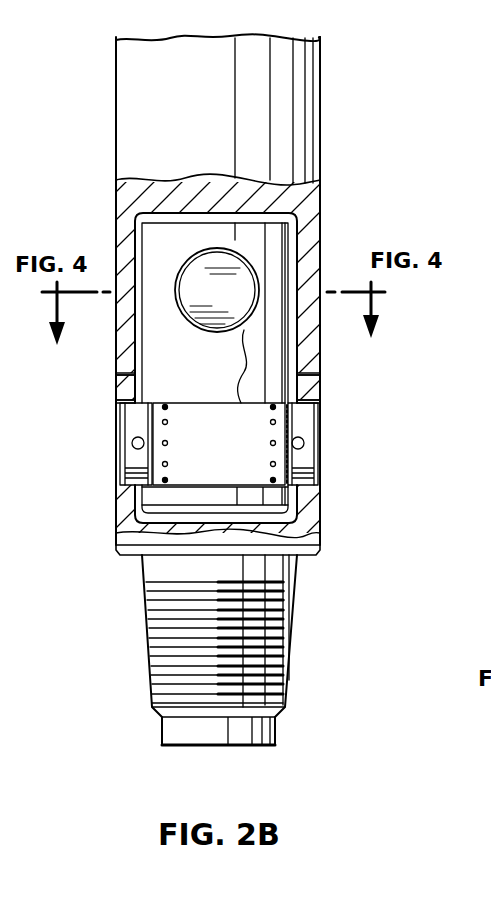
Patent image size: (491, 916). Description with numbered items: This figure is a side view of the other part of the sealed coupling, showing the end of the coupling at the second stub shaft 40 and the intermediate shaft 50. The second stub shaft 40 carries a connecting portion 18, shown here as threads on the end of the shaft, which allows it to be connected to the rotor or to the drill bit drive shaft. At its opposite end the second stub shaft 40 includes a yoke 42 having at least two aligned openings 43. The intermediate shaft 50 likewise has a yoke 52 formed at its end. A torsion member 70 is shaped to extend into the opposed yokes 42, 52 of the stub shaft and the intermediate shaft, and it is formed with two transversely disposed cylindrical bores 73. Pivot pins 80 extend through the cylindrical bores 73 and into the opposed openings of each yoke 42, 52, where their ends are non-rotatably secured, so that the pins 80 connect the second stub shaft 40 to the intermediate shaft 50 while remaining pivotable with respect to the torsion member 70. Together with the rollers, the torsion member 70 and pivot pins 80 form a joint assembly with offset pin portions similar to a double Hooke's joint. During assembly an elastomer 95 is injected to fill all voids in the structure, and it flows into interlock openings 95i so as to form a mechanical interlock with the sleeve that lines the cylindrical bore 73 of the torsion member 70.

The connecting portion 18 is at (297, 640).
The second stub shaft 40 is at (296, 568).
The yoke 42 is at (125, 395).
The aligned openings 43 is at (322, 495).
The intermediate shaft 50 is at (320, 158).
The yoke 52 is at (312, 280).
The torsion member 70 is at (197, 374).
The cylindrical bore 73 is at (263, 366).
The pivot pin 80 is at (205, 283).
The elastomer 95 is at (290, 497).
The interlock openings 95i is at (162, 423).